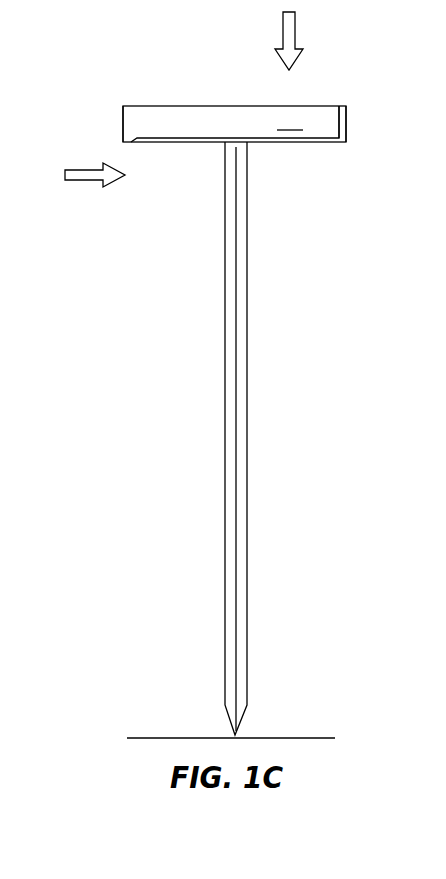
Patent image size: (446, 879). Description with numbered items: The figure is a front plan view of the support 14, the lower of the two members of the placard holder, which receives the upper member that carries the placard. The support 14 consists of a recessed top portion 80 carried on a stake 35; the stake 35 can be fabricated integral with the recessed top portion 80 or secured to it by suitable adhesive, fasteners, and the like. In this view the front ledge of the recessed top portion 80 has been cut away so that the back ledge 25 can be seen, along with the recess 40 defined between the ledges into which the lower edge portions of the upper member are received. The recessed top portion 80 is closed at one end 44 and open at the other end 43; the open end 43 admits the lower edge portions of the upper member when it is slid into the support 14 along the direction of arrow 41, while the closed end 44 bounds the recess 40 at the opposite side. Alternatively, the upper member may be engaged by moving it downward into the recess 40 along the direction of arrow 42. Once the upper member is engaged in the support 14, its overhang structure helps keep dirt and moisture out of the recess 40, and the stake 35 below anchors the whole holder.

The support 14 is at (264, 393).
The back ledge 25 is at (291, 118).
The stake 35 is at (243, 199).
The recess 40 is at (193, 122).
The arrow 41 is at (80, 182).
The arrow 42 is at (295, 23).
The open end 43 is at (124, 122).
The closed end 44 is at (345, 118).
The recessed top portion 80 is at (360, 128).